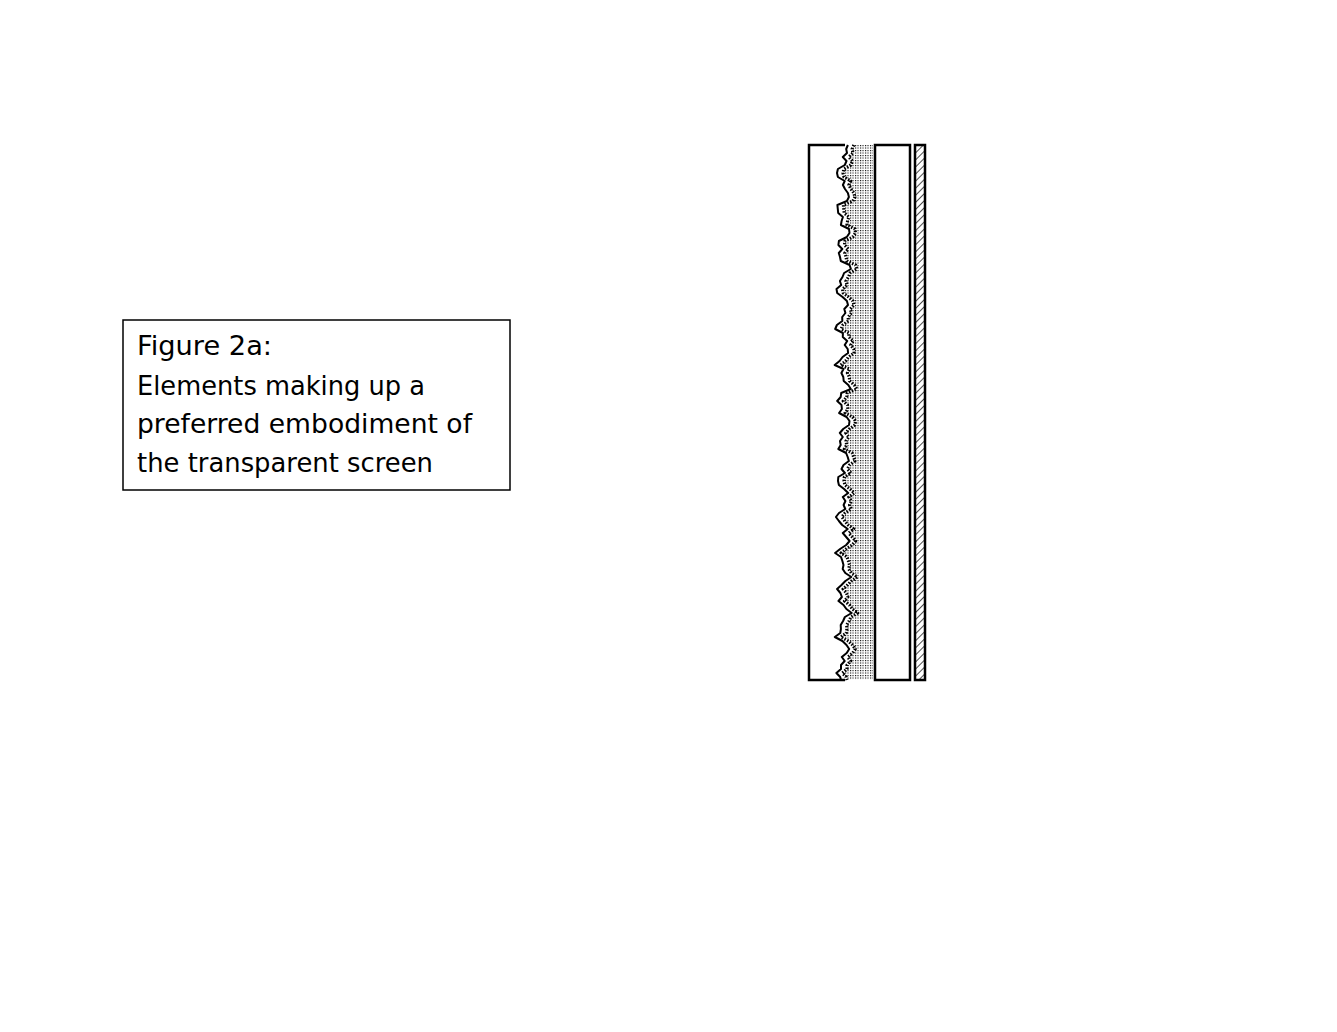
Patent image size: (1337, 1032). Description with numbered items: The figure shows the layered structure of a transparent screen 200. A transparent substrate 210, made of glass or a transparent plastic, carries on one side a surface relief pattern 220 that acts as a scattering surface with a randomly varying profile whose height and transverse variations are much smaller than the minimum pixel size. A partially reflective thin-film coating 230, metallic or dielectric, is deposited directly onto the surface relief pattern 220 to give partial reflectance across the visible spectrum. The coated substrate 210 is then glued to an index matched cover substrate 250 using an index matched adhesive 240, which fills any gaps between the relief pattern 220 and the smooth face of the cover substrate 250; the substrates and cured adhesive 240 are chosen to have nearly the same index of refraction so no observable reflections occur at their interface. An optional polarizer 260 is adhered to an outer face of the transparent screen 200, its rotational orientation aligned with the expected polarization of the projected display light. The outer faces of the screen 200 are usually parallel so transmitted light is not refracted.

The transparent screen 200 is at (842, 475).
The substrate 210 is at (797, 642).
The surface relief pattern 220 is at (846, 135).
The partially reflective thin-film coating 230 is at (853, 138).
The index matched adhesive 240 is at (864, 141).
The index matched cover substrate 250 is at (891, 690).
The polarizer 260 is at (927, 688).